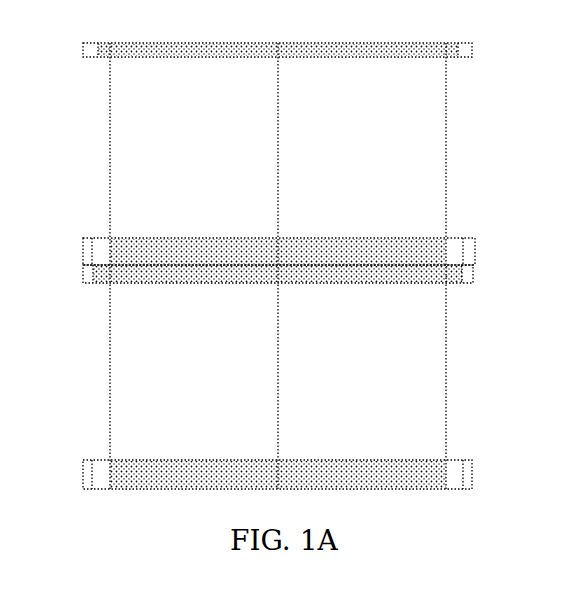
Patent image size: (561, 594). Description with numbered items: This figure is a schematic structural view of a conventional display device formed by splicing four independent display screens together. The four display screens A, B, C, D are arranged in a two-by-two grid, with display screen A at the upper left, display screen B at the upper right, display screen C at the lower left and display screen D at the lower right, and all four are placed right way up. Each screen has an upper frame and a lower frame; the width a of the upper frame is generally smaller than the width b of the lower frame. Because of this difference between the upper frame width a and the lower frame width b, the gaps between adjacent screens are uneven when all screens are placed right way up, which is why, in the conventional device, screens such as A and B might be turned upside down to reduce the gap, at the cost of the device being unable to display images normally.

The width of upper frame a is at (98, 47).
The width of lower frame b is at (92, 252).
The display screen A is at (194, 139).
The display screen B is at (361, 138).
The display screen C is at (194, 361).
The display screen D is at (361, 361).